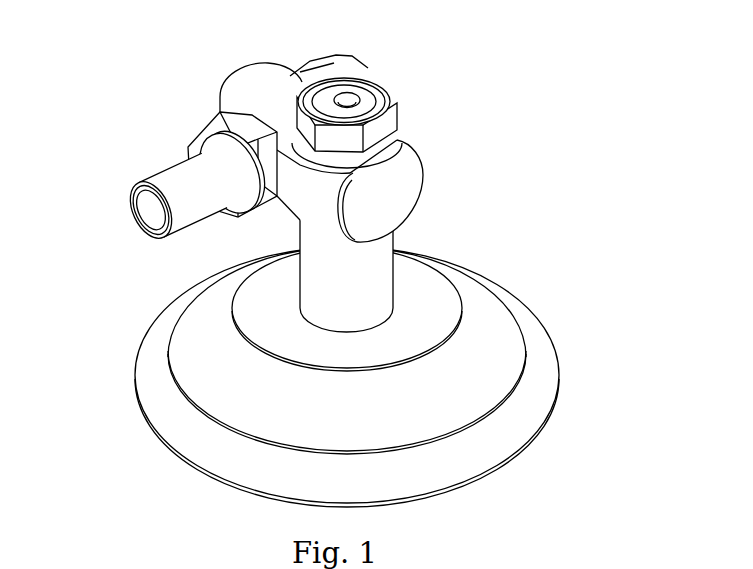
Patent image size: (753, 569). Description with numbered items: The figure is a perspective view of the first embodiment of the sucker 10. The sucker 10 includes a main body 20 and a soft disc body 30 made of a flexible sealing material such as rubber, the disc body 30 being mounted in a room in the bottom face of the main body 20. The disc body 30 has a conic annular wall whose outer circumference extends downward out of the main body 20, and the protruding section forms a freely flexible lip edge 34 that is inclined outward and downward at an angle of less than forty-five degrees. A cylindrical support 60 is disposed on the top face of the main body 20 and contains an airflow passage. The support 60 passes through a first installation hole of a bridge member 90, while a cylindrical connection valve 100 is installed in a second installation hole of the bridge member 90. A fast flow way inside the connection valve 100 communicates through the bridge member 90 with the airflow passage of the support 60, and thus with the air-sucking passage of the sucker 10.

The sucker 10 is at (370, 256).
The main body 20 is at (473, 302).
The disc body 30 is at (571, 366).
The lip edge 34 is at (518, 417).
The support 60 is at (385, 262).
The bridge member 90 is at (228, 82).
The connection valve 100 is at (143, 168).